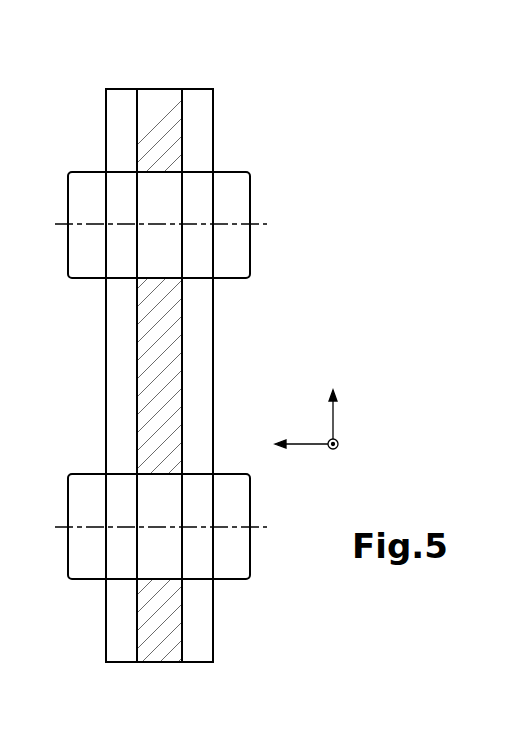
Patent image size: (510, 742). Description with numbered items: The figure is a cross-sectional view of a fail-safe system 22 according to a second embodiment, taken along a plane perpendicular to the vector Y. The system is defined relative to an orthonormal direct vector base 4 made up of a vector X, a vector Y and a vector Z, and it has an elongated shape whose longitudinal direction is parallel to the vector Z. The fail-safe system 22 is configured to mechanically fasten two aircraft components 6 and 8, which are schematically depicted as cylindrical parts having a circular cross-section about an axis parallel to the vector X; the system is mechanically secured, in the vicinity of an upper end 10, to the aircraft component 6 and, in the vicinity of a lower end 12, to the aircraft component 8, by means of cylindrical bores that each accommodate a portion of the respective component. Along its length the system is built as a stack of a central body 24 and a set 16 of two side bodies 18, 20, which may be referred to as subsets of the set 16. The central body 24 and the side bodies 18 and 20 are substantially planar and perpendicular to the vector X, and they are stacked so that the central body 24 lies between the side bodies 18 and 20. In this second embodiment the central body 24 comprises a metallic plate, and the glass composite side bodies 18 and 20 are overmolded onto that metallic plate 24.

The orthonormal direct vector base 4 is at (362, 407).
The aircraft component 6 is at (250, 255).
The aircraft component 8 is at (227, 582).
The upper end 10 is at (203, 89).
The lower end 12 is at (197, 664).
The set of two side bodies 16 is at (137, 72).
The side body 18 is at (115, 143).
The side body 20 is at (200, 142).
The fail-safe system 22 is at (318, 114).
The central body 24 is at (175, 346).